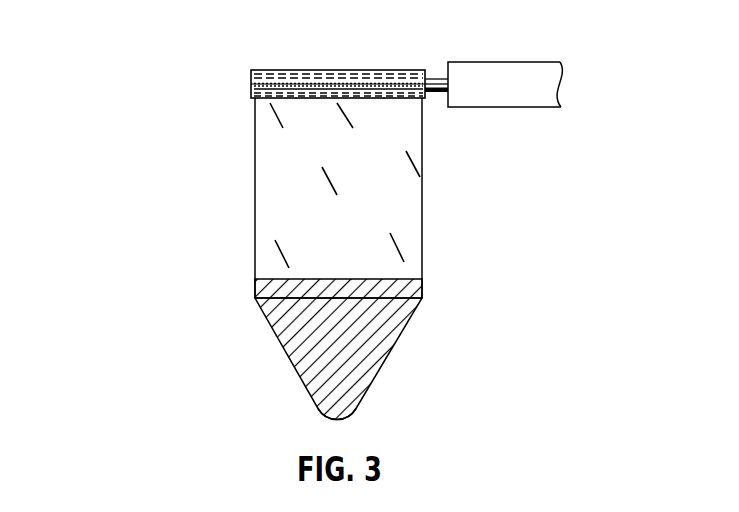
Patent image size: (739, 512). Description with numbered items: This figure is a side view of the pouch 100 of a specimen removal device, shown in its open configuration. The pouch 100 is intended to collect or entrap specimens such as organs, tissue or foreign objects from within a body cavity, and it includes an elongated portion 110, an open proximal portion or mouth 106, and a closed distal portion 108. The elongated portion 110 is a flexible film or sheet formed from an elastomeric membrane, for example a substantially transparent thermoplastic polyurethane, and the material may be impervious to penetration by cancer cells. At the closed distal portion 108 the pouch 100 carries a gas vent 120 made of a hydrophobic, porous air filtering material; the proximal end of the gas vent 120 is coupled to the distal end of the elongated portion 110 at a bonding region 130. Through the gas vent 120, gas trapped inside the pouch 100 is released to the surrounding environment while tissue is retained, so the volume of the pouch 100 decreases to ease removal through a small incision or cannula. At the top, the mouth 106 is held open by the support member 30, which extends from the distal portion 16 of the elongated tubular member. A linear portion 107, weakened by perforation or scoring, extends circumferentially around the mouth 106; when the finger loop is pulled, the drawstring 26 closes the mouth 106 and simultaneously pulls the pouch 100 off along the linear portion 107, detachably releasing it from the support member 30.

The pouch 100 is at (146, 100).
The mouth 106 is at (358, 56).
The linear portion 107 is at (251, 86).
The elongated portion 110 is at (407, 206).
The bonding region 130 is at (414, 288).
The gas vent 120 is at (418, 370).
The closed distal portion 108 is at (286, 390).
The support member 30 is at (438, 78).
The drawstring 26 is at (436, 93).
The distal portion 16 is at (503, 62).